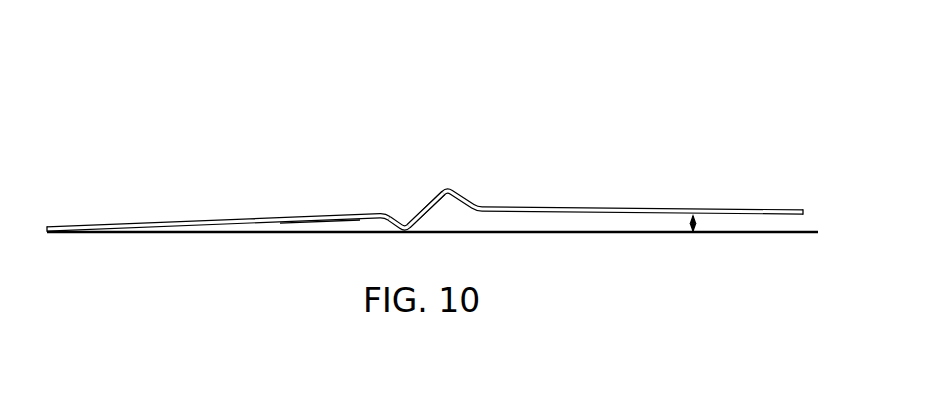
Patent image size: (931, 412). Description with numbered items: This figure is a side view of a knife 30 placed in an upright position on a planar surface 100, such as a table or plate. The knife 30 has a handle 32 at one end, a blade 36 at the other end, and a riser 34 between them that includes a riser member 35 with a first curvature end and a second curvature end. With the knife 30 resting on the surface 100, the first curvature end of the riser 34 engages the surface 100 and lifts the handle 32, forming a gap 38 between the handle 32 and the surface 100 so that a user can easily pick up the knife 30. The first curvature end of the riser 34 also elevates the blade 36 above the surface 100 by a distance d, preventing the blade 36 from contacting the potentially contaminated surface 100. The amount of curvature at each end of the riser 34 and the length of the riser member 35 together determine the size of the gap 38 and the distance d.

The knife 30 is at (425, 170).
The handle 32 is at (202, 221).
The riser 34 is at (443, 201).
The riser member 35 is at (428, 208).
The blade 36 is at (651, 208).
The gap 38 is at (316, 230).
The planar surface 100 is at (752, 223).
The distance d is at (690, 226).